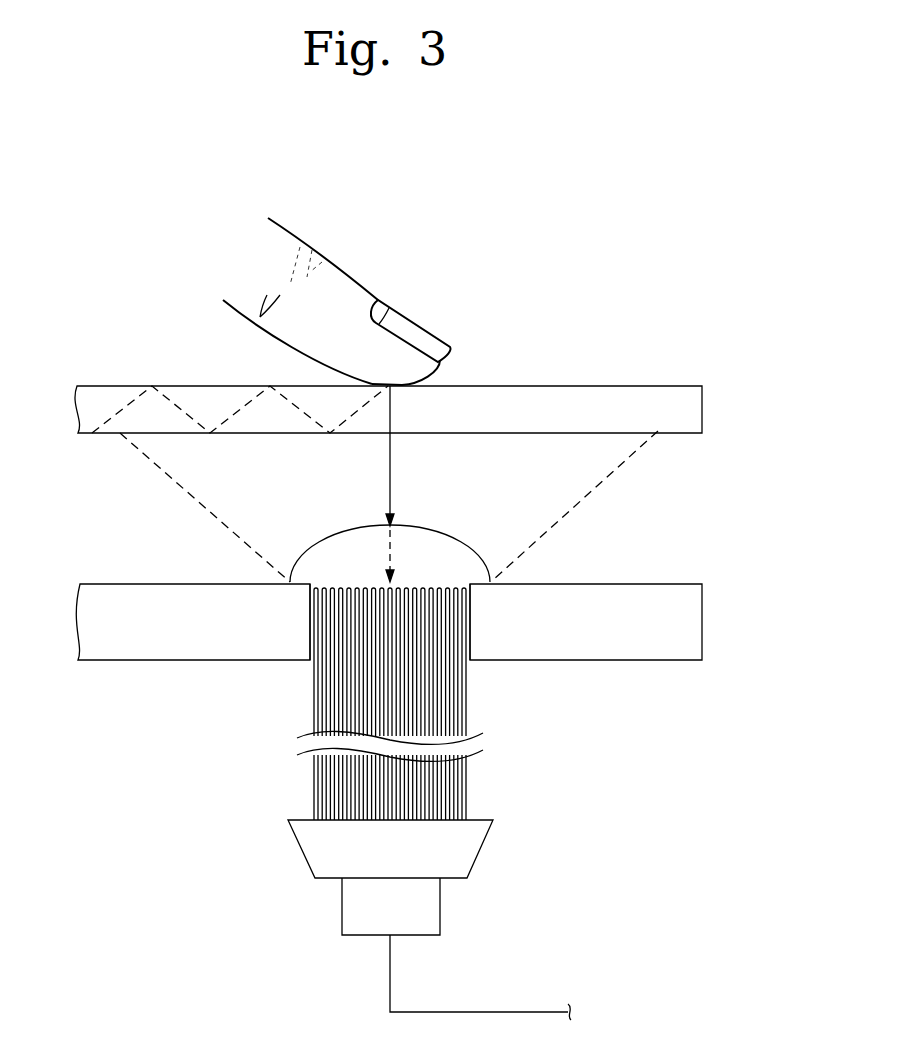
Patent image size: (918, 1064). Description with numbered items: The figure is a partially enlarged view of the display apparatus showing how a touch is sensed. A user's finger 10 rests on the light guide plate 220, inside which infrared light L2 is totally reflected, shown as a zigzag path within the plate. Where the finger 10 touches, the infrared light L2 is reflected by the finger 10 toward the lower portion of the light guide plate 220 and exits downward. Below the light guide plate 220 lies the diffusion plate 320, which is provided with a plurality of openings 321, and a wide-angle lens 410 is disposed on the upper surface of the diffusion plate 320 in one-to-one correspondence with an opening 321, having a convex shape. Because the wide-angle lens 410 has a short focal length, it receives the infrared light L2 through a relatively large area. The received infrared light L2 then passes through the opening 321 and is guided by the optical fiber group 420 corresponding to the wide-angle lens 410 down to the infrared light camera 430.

The finger 10 is at (343, 278).
The infrared light L2 is at (181, 399).
The light guide plate 220 is at (696, 414).
The diffusion plate 320 is at (696, 624).
The opening 321 is at (467, 660).
The wide-angle lens 410 is at (448, 533).
The optical fiber group 420 is at (466, 792).
The infrared light camera 430 is at (481, 853).